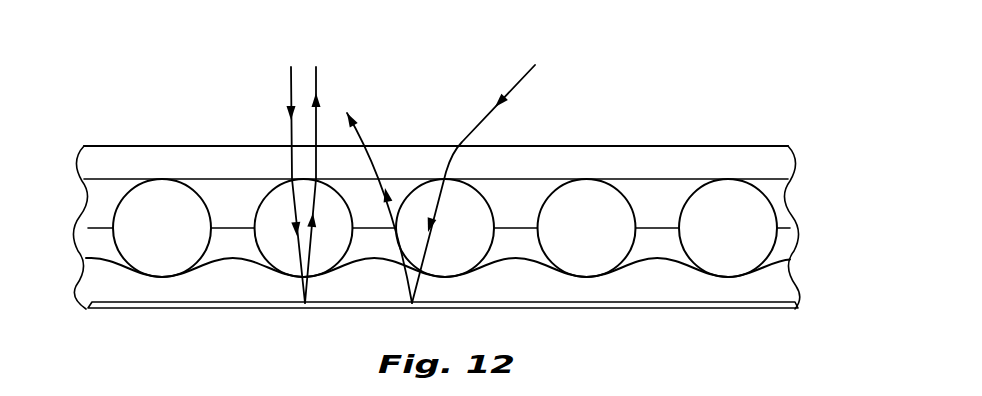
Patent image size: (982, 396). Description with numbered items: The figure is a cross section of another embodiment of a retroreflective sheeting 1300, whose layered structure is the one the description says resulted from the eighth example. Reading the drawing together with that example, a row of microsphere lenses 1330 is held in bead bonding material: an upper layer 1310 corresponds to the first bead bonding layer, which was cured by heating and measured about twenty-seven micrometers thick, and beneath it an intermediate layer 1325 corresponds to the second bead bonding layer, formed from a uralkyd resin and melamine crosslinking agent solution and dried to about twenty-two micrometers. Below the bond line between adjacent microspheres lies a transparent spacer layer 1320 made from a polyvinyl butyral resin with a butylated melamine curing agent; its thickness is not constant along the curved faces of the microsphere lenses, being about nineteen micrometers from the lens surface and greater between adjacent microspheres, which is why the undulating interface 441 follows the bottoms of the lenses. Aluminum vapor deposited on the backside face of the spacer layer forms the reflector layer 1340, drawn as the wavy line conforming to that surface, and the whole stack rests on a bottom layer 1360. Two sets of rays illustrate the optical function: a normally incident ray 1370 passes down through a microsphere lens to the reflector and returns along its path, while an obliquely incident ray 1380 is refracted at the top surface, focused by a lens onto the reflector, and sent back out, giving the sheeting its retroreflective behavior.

The light guide assembly 1300 is at (722, 82).
The top layer 1310 is at (775, 162).
The intermediate layer 1325 is at (778, 198).
The spacer layer 1320 is at (780, 248).
The spherical bead 1330 is at (728, 197).
The wavy reflective layer 1340 is at (780, 288).
The bottom substrate 1360 is at (767, 305).
The interface between layers 441 is at (117, 285).
The normal-incidence light rays 1370 is at (290, 82).
The oblique-incidence light ray 1380 is at (513, 86).